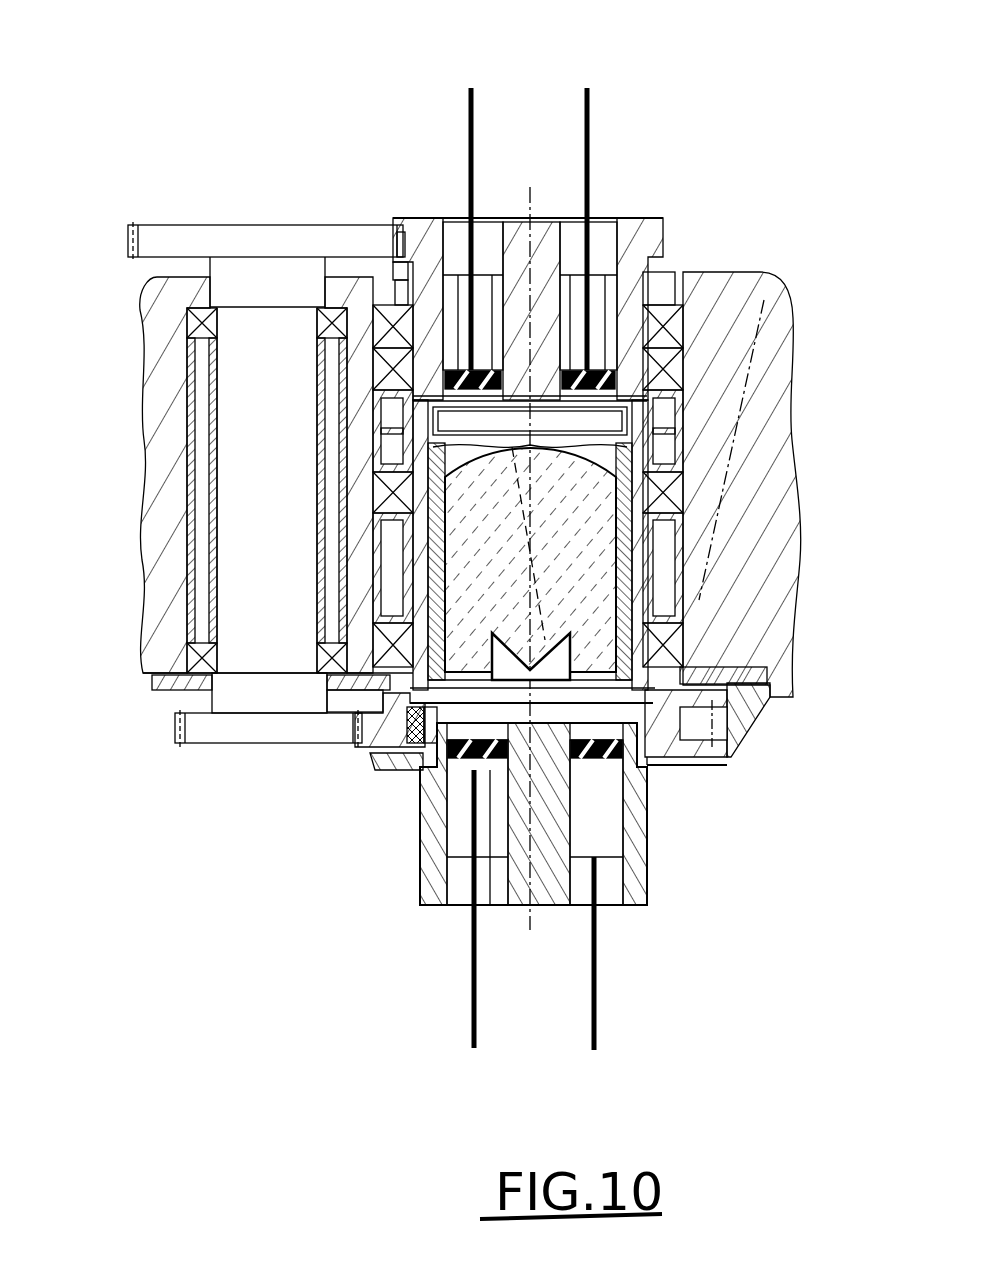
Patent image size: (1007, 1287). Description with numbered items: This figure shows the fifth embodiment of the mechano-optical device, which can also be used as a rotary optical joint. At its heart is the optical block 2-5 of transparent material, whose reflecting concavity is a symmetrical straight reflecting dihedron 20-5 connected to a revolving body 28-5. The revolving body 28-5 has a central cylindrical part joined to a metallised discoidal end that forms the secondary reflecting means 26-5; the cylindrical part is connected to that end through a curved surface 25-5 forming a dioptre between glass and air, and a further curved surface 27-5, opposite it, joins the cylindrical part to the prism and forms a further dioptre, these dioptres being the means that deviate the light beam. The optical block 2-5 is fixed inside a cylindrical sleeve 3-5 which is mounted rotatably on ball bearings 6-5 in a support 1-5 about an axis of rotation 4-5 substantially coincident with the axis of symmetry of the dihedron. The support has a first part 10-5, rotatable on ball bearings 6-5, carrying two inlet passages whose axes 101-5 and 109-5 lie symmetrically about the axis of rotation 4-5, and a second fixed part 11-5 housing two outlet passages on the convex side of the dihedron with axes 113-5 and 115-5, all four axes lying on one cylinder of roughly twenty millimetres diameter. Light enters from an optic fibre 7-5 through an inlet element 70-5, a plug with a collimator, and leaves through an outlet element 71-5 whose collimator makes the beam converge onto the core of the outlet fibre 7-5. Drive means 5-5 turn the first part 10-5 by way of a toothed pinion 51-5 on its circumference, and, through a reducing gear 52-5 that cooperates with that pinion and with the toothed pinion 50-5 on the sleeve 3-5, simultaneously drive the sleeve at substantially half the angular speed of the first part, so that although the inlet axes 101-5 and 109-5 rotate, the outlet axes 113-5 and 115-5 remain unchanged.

The support 1-5 is at (787, 392).
The optical block 2-5 is at (655, 565).
The cylindrical sleeve 3-5 is at (692, 752).
The axis of rotation 4-5 is at (533, 908).
The drive means 5-5 is at (126, 332).
The ball bearings 6-5 is at (673, 370).
The optic fibre 7-5 is at (474, 88).
The first part 10-5 is at (632, 235).
The second fixed part 11-5 is at (640, 880).
The reflecting dihedron 20-5 is at (564, 642).
The curved surface 25-5 is at (560, 645).
The secondary reflecting means 26-5 is at (478, 650).
The further curved surface 27-5 is at (424, 664).
The revolving body 28-5 is at (440, 552).
The toothed pinion 50-5 is at (175, 733).
The toothed pinion 51-5 is at (398, 232).
The reducing gear 52-5 is at (268, 322).
The inlet element 70-5 is at (468, 312).
The outlet element 71-5 is at (499, 845).
The axis 101-5 is at (408, 200).
The axis 109-5 is at (593, 307).
The axis 113-5 is at (473, 833).
The axis 115-5 is at (628, 810).